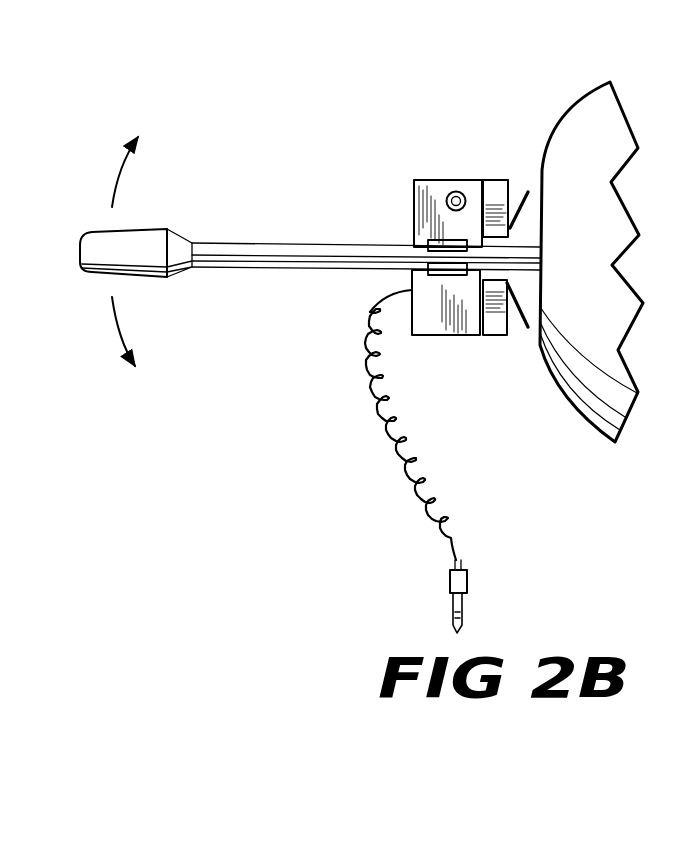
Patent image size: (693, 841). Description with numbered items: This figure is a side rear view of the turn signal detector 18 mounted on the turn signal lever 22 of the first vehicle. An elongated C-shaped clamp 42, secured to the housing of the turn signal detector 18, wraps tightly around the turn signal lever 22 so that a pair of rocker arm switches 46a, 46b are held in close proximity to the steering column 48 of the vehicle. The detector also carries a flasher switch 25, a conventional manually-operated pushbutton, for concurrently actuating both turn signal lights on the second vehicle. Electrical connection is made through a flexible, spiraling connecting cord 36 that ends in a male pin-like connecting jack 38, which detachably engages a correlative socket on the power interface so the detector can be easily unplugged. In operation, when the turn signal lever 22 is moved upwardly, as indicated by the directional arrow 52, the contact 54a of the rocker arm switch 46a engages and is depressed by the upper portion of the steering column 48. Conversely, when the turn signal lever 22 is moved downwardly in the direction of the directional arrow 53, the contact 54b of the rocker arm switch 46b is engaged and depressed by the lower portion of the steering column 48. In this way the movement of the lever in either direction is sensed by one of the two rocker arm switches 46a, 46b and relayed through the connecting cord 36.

The turn signal detector 18 is at (368, 153).
The turn signal lever 22 is at (93, 243).
The flasher switch 25 is at (453, 192).
The connecting cord 36 is at (408, 418).
The connecting jack 38 is at (470, 612).
The C-shaped clamp 42 is at (437, 270).
The rocker arm switch 46a is at (495, 192).
The rocker arm switch 46b is at (493, 328).
The steering column 48 is at (588, 397).
The directional arrow 52 is at (132, 160).
The directional arrow 53 is at (122, 330).
The contact 54a is at (522, 211).
The contact 54b is at (520, 300).